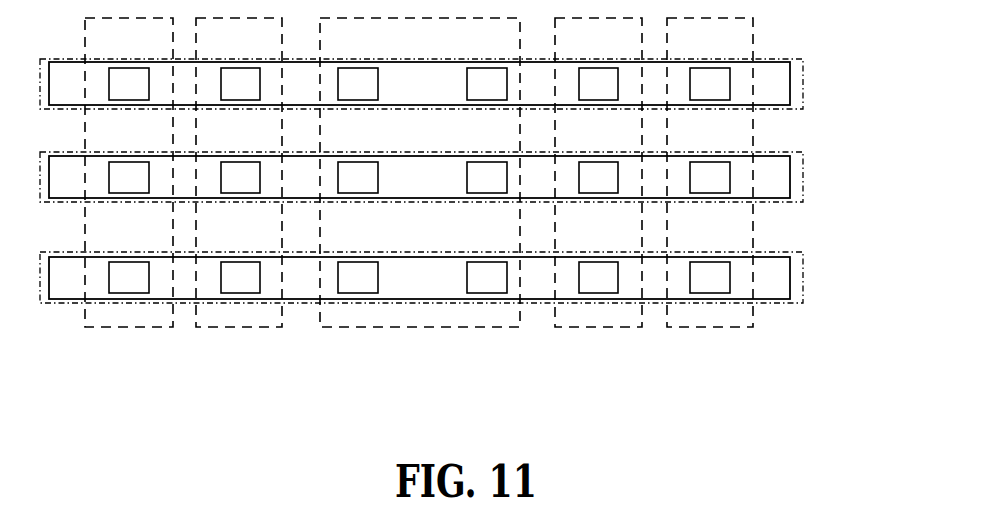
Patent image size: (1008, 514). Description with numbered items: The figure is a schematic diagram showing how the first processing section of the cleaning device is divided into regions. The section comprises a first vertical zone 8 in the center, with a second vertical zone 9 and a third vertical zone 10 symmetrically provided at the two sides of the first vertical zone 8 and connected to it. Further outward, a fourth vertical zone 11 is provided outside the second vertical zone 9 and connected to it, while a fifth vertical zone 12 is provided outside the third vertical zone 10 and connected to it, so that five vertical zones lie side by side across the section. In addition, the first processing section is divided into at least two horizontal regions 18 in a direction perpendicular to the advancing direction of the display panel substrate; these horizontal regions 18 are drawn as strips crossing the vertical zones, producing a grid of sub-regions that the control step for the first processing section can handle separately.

The first vertical zone 8 is at (432, 327).
The second vertical zone 9 is at (610, 327).
The third vertical zone 10 is at (253, 327).
The fourth vertical zone 11 is at (717, 327).
The fifth vertical zone 12 is at (155, 327).
The horizontal regions 18 is at (797, 258).